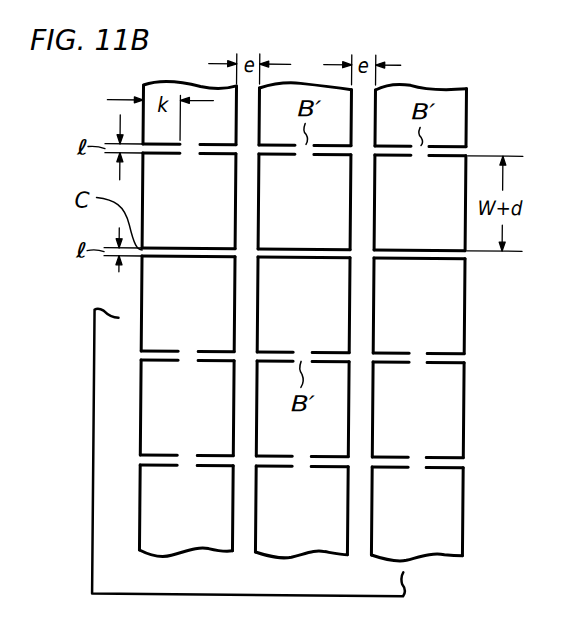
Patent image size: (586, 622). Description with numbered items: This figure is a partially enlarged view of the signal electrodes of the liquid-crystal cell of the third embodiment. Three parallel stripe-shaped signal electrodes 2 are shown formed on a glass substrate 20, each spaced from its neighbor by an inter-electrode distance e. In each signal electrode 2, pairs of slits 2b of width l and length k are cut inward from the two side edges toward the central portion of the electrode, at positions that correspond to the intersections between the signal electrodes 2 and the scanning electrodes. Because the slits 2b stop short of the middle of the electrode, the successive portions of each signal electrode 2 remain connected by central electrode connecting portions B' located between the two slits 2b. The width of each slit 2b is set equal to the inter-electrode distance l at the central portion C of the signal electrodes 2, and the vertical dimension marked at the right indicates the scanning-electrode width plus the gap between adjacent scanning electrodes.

The signal electrode 2 is at (206, 538).
The slit 2b is at (458, 152).
The glass substrate 20 is at (102, 563).